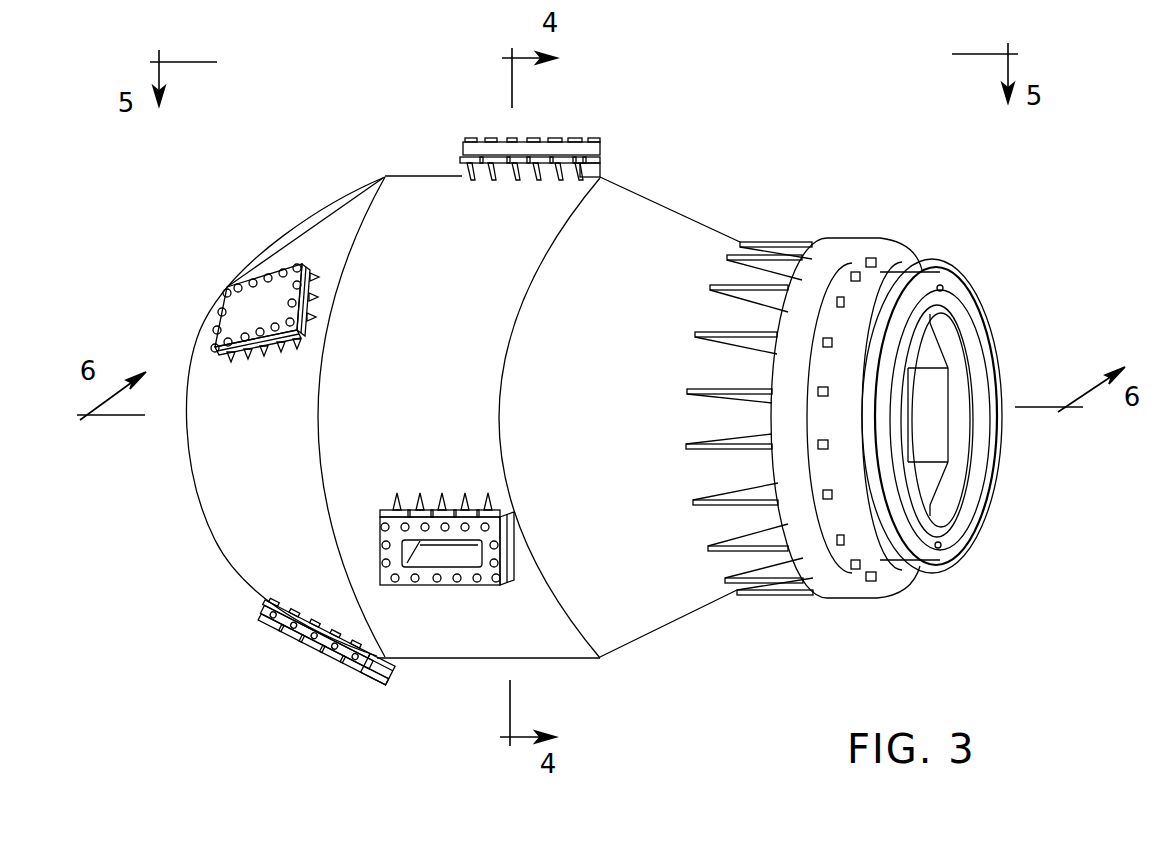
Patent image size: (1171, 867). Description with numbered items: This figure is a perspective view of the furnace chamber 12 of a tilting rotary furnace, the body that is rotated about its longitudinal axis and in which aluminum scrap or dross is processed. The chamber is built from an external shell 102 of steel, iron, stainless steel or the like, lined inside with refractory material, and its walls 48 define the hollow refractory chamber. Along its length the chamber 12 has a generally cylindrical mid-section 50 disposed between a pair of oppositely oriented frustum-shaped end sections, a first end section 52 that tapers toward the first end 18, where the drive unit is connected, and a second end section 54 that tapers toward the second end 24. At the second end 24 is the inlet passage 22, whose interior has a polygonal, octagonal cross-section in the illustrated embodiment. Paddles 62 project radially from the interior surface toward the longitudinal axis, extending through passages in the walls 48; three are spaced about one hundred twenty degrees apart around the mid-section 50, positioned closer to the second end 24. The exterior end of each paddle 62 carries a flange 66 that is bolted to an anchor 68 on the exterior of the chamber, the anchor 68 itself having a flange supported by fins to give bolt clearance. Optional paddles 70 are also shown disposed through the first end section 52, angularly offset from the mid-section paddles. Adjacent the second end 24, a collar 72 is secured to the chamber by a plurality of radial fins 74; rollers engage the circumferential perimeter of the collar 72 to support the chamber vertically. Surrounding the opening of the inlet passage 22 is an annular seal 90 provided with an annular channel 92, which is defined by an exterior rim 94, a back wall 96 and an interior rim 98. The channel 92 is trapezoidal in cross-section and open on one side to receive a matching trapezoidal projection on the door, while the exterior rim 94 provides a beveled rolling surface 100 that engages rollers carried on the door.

The furnace chamber 12 is at (398, 210).
The first end 18 is at (195, 452).
The inlet passage 22 is at (944, 428).
The second end 24 is at (905, 300).
The furnace chamber walls 48 is at (673, 233).
The mid-section 50 is at (440, 225).
The first end section 52 is at (228, 558).
The second end section 54 is at (672, 598).
The paddle 62 is at (560, 140).
The flange 66 is at (590, 152).
The anchor 68 is at (600, 176).
The paddle 70 is at (270, 305).
The collar 72 is at (868, 290).
The radial fins 74 is at (750, 257).
The annular seal 90 is at (948, 580).
The annular channel 92 is at (957, 297).
The exterior rim 94 is at (938, 280).
The back wall 96 is at (968, 325).
The interior rim 98 is at (985, 345).
The beveled rolling surface 100 is at (913, 580).
The external shell 102 is at (600, 650).